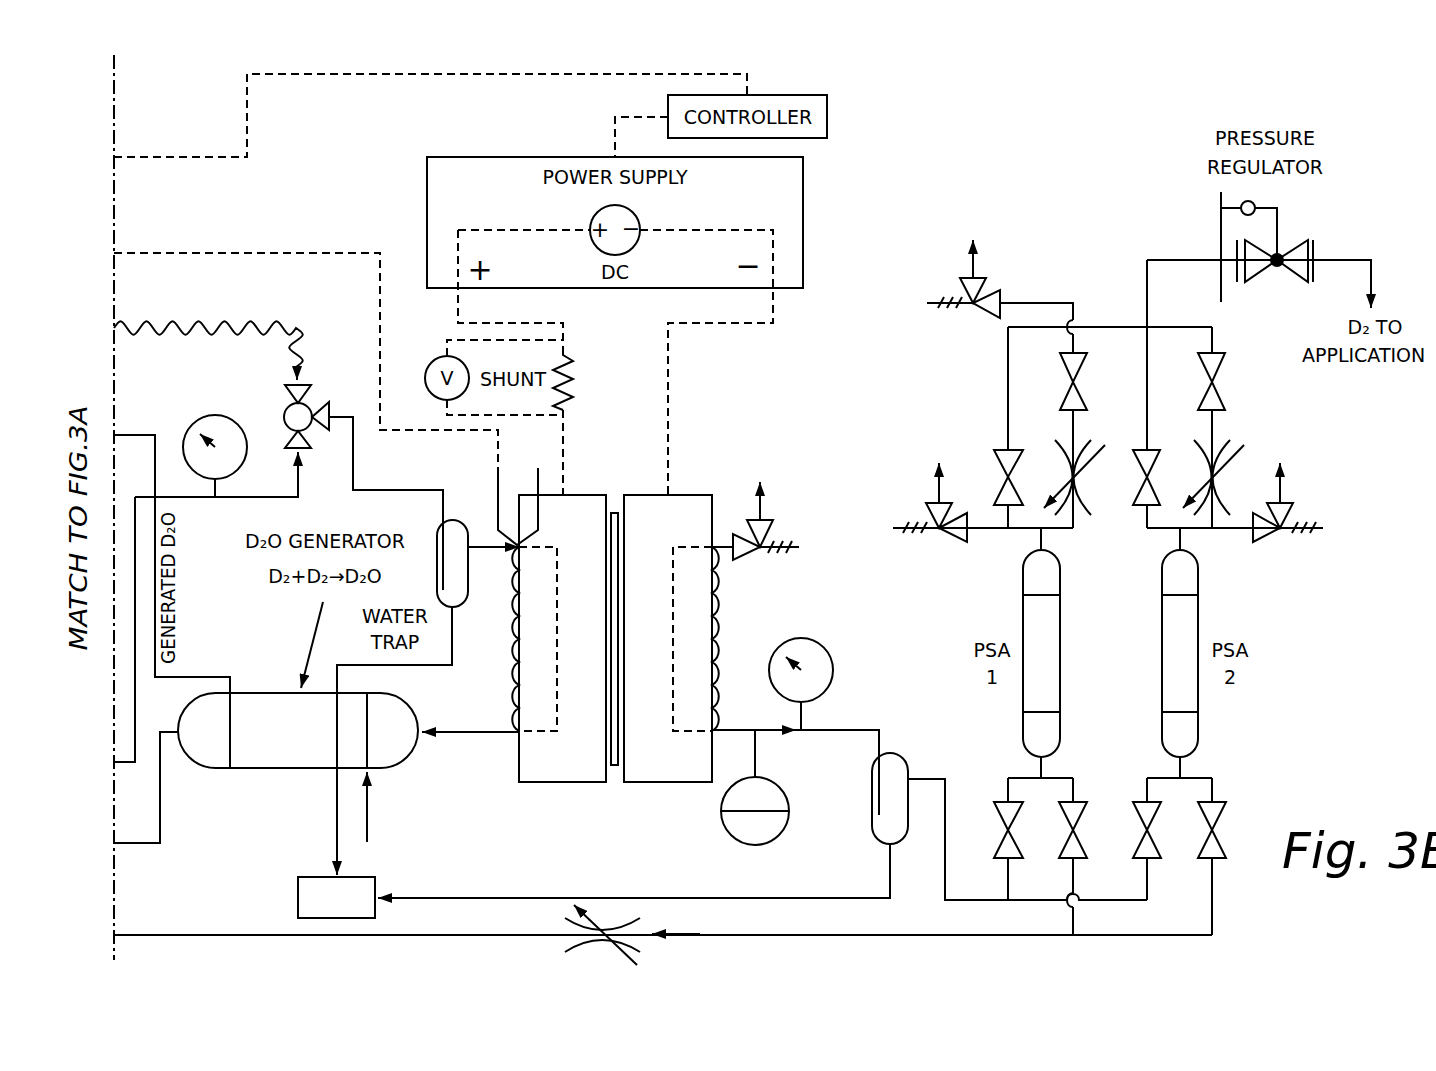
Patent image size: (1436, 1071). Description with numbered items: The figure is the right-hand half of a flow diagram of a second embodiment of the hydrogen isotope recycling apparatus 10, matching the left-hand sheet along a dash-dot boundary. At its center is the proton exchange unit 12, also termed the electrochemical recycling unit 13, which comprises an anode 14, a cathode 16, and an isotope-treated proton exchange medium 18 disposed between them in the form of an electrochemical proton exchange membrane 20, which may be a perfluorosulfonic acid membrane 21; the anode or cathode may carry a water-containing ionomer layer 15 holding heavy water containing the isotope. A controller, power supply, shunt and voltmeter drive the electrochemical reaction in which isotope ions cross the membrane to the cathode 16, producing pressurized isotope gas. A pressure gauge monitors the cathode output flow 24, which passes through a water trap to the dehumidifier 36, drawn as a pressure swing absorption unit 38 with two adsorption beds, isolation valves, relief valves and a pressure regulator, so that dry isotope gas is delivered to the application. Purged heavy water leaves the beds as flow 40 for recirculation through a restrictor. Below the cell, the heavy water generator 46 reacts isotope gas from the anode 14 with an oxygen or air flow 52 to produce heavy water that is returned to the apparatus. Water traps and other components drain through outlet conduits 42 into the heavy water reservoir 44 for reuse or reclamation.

The hydrogen isotope recycling apparatus 10 is at (1032, 124).
The proton exchange unit 12 is at (648, 640).
The electrochemical recycling unit 13 is at (538, 782).
The anode 14 is at (517, 648).
The water-containing layer 15 is at (557, 702).
The cathode 16 is at (722, 578).
The proton exchange medium 18 is at (617, 768).
The electrochemical proton exchange membrane 20 is at (609, 546).
The perfluorosulfonic acid membrane 21 is at (627, 568).
The output flow 24 is at (795, 735).
The dehumidifier 36 is at (1180, 578).
The pressure swing absorption unit 38 is at (1180, 730).
The flow 40 is at (680, 935).
The outlet conduits 42 is at (337, 828).
The heavy water reservoir 44 is at (350, 912).
The heavy water generator 46 is at (215, 772).
The flow of O2 52 is at (372, 798).